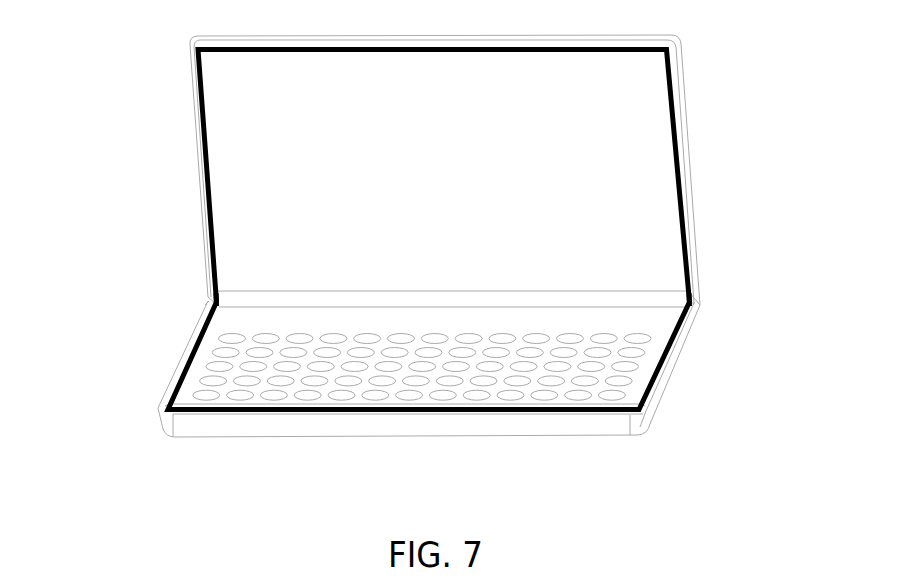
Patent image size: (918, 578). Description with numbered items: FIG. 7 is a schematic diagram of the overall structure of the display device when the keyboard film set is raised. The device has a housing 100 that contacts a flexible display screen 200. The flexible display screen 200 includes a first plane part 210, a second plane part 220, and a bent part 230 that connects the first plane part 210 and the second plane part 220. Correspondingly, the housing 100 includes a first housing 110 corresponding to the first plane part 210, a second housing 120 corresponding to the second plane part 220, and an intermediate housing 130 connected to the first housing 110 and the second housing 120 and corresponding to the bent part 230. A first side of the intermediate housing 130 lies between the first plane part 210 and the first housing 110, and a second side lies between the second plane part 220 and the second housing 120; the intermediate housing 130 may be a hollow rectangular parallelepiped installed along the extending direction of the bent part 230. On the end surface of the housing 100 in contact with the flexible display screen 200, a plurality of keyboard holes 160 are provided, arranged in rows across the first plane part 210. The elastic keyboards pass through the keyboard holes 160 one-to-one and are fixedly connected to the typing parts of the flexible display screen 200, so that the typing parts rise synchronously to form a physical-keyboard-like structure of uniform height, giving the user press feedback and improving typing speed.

The housing 100 is at (789, 255).
The first housing 110 is at (685, 337).
The second housing 120 is at (693, 243).
The intermediate housing 130 is at (692, 297).
The keyboard holes 160 is at (408, 388).
The flexible display screen 200 is at (86, 213).
The first plane part 210 is at (202, 355).
The second plane part 220 is at (237, 242).
The bent part 230 is at (230, 298).